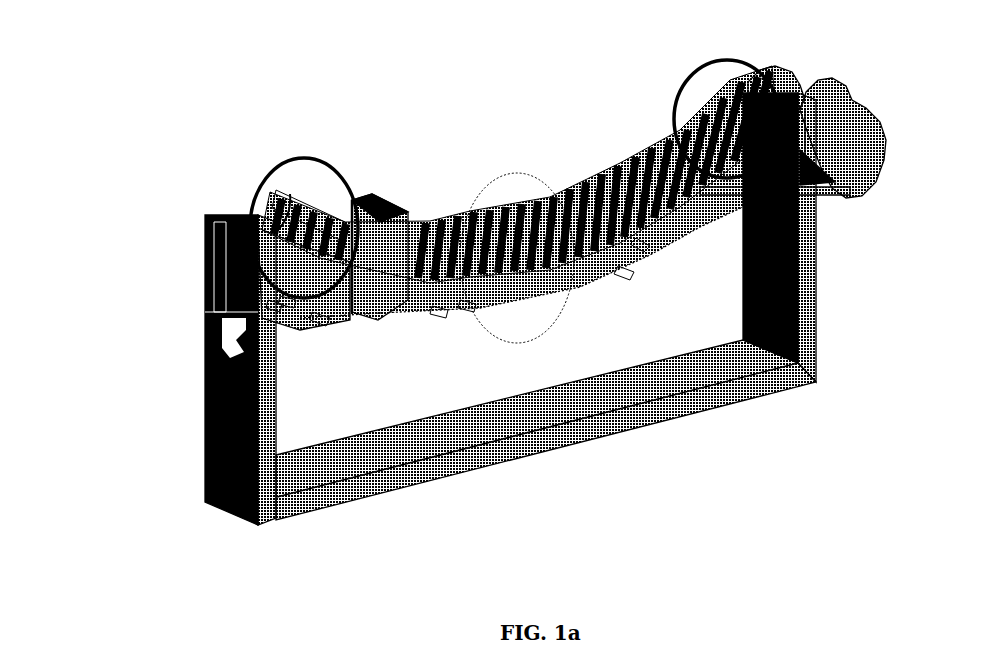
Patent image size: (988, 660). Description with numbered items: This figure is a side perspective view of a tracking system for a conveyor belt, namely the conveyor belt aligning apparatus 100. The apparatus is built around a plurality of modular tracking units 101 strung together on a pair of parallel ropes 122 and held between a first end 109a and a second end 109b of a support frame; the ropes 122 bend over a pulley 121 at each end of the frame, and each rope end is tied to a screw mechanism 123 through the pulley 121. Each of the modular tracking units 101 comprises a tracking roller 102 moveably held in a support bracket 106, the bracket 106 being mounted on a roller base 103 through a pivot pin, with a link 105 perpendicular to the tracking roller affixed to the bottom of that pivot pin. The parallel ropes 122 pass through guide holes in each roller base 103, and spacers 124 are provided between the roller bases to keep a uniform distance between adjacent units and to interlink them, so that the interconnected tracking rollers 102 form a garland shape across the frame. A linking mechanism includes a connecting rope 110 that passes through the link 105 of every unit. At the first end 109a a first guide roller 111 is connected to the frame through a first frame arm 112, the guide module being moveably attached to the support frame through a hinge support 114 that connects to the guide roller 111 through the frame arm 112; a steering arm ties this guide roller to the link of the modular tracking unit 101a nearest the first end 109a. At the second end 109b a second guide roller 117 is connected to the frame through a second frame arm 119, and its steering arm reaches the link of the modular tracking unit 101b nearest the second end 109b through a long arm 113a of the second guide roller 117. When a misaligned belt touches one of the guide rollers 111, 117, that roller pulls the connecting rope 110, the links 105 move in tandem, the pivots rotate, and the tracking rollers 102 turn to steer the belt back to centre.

The conveyor belt aligning apparatus 100 is at (75, 160).
The modular tracking units 101 is at (490, 182).
The modular tracking unit nearest the first end 101a is at (304, 209).
The modular tracking unit nearest the second end 101b is at (705, 109).
The tracking roller 102 is at (290, 198).
The roller base 103 is at (467, 304).
The link 105 is at (438, 312).
The support bracket 106 is at (265, 226).
The first end of the support frame 109a is at (208, 442).
The second end of the support frame 109b is at (813, 322).
The connecting rope 110 is at (628, 270).
The first guide roller 111 is at (377, 212).
The first frame arm 112 is at (318, 318).
The long arm of the second guide roller 113a is at (807, 188).
The hinge support 114 is at (283, 302).
The second guide roller 117 is at (840, 113).
The second frame arm 119 is at (813, 150).
The pulley 121 is at (208, 250).
The parallel ropes 122 is at (273, 305).
The screw mechanism 123 is at (205, 318).
The spacers 124 is at (643, 242).